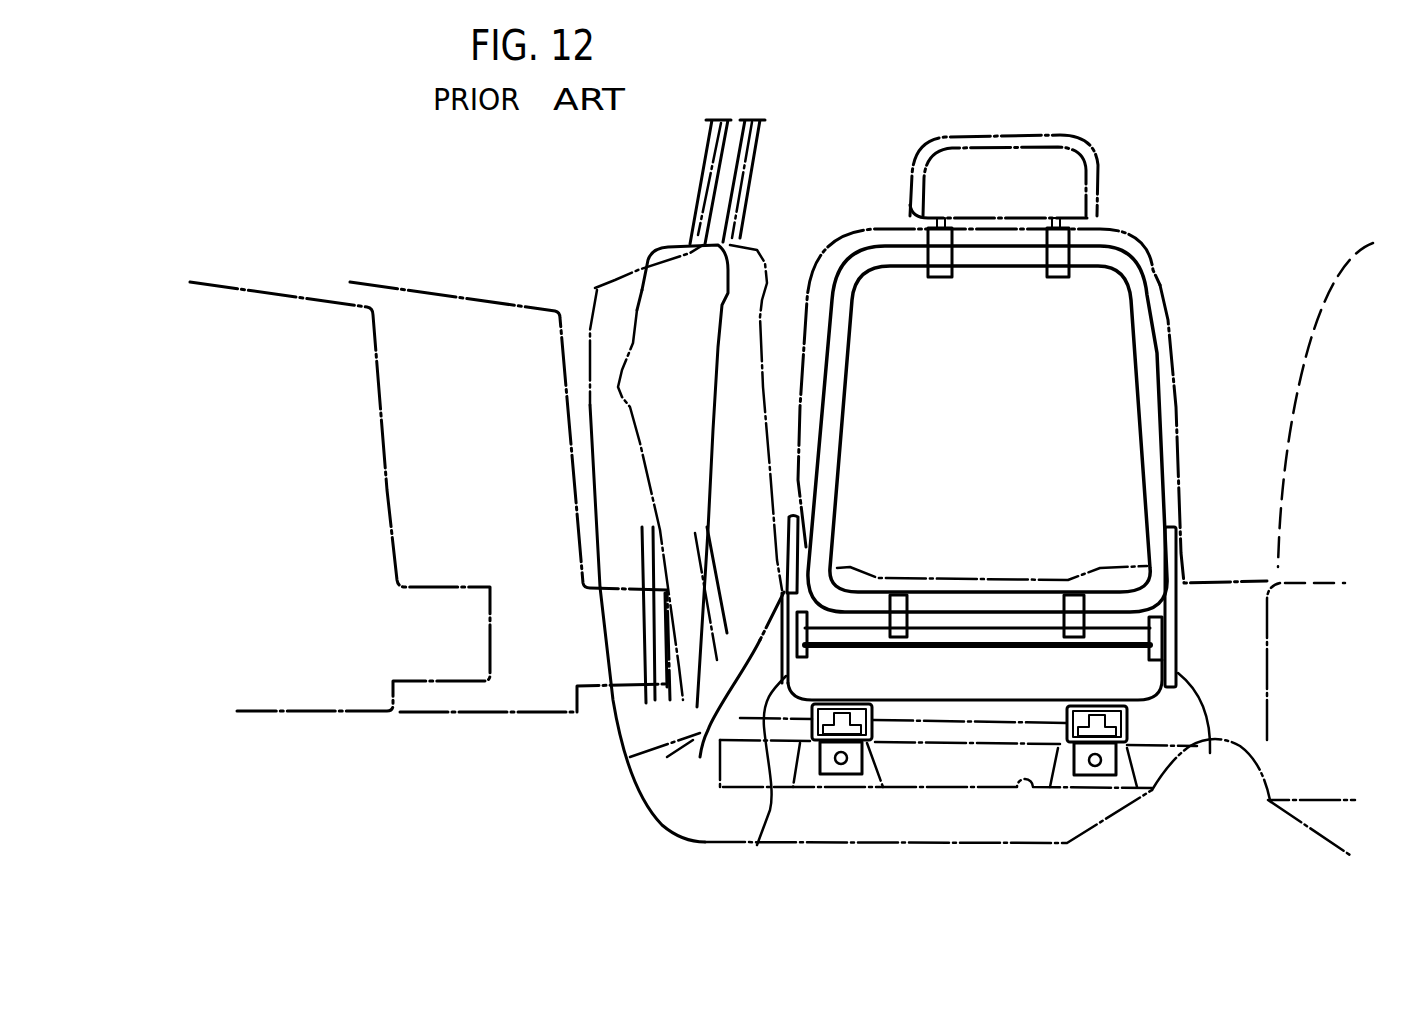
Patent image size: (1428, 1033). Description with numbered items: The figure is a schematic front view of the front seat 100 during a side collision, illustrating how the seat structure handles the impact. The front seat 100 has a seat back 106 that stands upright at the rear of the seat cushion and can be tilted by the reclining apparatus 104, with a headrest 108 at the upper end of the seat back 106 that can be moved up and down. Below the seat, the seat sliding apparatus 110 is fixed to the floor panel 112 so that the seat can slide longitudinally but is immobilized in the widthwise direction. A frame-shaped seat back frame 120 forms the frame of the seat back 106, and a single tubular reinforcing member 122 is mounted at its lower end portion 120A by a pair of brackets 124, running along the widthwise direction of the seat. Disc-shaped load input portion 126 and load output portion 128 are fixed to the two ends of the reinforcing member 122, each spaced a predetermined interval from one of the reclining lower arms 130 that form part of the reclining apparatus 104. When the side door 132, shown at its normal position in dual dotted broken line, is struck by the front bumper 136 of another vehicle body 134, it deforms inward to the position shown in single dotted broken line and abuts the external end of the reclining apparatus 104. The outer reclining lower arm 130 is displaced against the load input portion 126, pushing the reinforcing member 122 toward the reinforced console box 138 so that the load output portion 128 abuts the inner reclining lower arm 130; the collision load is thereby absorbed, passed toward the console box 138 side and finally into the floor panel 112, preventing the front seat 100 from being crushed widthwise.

The front seat 100 is at (859, 205).
The reclining apparatus 104 is at (1193, 496).
The seat back 106 is at (817, 308).
The headrest 108 is at (1084, 152).
The seat sliding apparatus 110 is at (893, 733).
The floor panel 112 is at (1040, 790).
The seat back frame 120 is at (1162, 375).
The lower end portion of the seat back frame 120A is at (968, 590).
The reinforcing member 122 is at (990, 638).
The brackets 124 is at (904, 632).
The load input portion 126 is at (806, 657).
The load output portion 128 is at (1147, 655).
The reclining lower arms 130 is at (989, 779).
The side door 132 is at (648, 278).
The another vehicle body 134 is at (311, 297).
The front bumper 136 is at (437, 683).
The reinforced console box 138 is at (1233, 583).